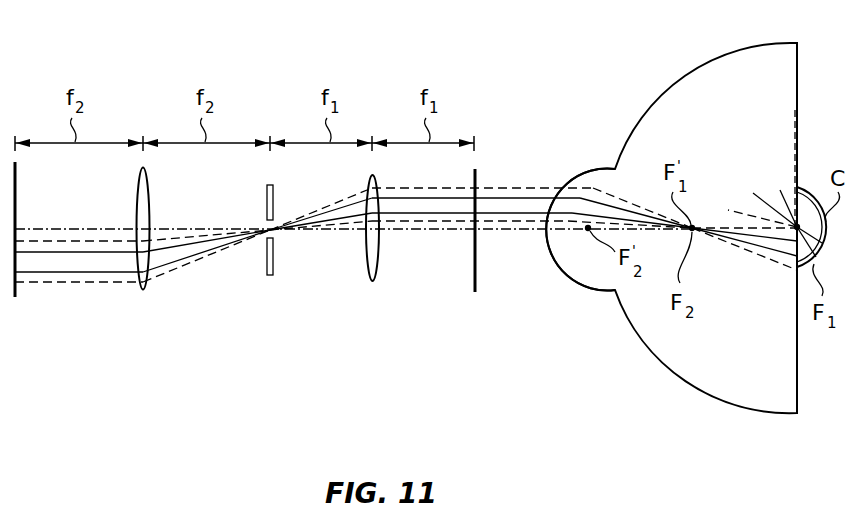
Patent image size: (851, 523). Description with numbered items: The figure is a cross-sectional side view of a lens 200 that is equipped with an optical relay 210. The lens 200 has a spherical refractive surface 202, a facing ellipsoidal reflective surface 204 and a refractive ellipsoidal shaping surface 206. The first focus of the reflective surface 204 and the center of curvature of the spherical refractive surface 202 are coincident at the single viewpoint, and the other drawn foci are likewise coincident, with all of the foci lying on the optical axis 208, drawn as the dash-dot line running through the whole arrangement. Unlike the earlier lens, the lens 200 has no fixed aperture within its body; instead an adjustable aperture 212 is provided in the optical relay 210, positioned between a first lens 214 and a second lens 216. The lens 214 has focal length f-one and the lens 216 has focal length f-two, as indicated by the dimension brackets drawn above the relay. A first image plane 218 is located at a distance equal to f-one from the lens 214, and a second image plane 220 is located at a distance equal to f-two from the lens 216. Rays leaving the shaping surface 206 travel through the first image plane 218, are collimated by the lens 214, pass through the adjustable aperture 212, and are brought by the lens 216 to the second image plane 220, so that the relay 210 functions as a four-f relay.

The lens 200 is at (663, 210).
The spherical refractive surface 202 is at (648, 348).
The ellipsoidal reflective surface 204 is at (800, 187).
The refractive ellipsoidal shaping surface 206 is at (583, 271).
The optical axis 208 is at (77, 228).
The optical relay 210 is at (415, 292).
The adjustable aperture 212 is at (273, 275).
The lens 214 is at (375, 281).
The lens 216 is at (145, 290).
The first image plane 218 is at (475, 294).
The second image plane 220 is at (15, 299).